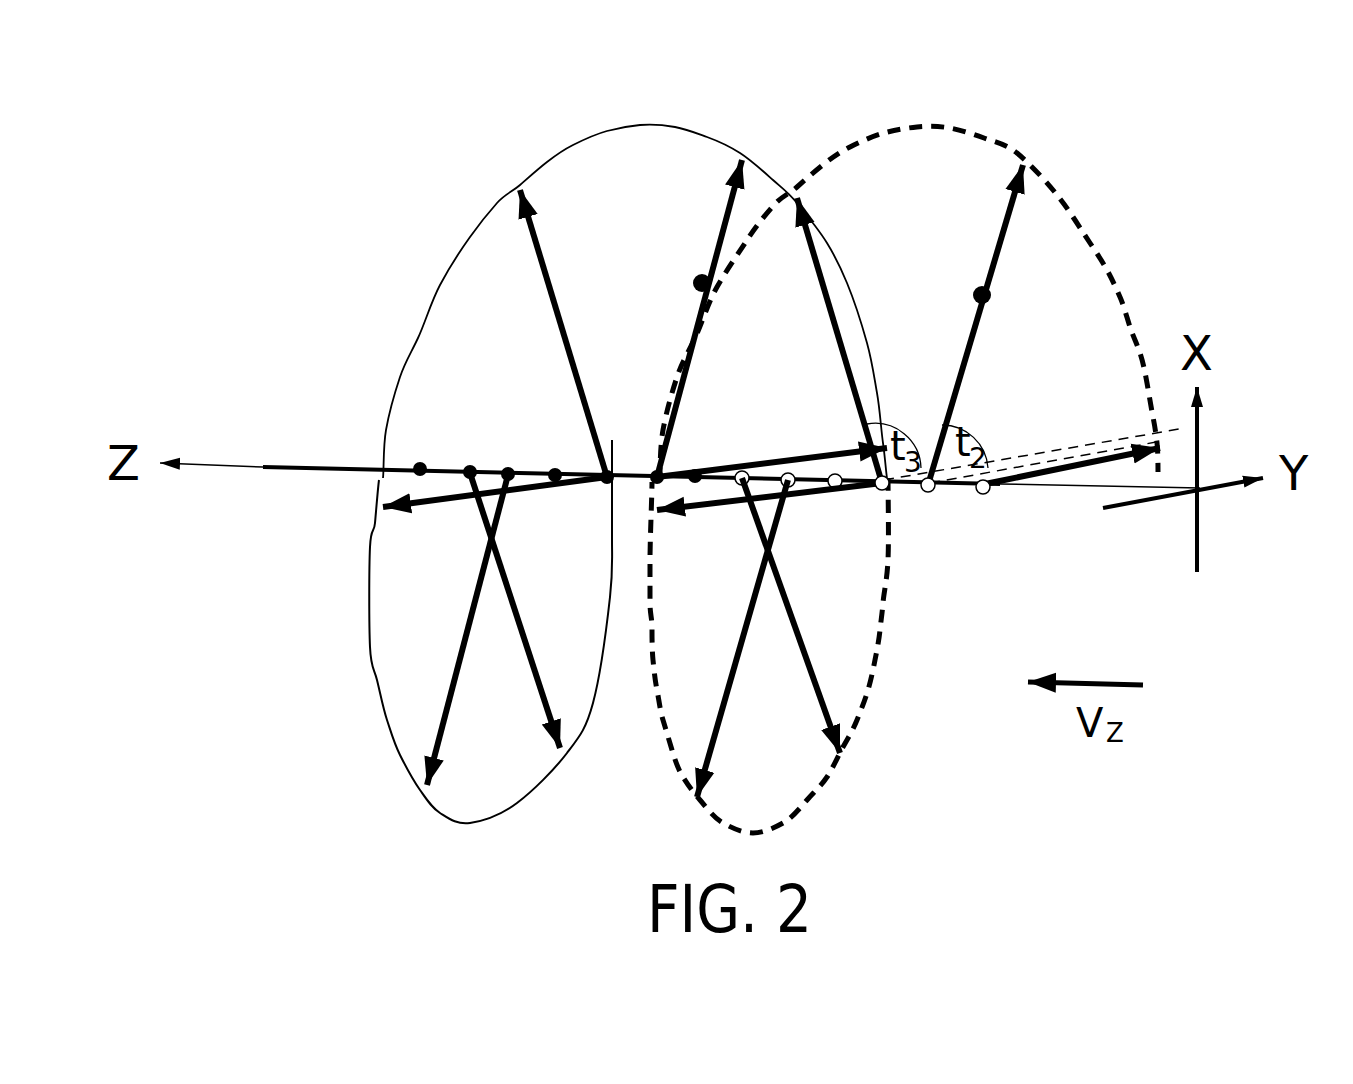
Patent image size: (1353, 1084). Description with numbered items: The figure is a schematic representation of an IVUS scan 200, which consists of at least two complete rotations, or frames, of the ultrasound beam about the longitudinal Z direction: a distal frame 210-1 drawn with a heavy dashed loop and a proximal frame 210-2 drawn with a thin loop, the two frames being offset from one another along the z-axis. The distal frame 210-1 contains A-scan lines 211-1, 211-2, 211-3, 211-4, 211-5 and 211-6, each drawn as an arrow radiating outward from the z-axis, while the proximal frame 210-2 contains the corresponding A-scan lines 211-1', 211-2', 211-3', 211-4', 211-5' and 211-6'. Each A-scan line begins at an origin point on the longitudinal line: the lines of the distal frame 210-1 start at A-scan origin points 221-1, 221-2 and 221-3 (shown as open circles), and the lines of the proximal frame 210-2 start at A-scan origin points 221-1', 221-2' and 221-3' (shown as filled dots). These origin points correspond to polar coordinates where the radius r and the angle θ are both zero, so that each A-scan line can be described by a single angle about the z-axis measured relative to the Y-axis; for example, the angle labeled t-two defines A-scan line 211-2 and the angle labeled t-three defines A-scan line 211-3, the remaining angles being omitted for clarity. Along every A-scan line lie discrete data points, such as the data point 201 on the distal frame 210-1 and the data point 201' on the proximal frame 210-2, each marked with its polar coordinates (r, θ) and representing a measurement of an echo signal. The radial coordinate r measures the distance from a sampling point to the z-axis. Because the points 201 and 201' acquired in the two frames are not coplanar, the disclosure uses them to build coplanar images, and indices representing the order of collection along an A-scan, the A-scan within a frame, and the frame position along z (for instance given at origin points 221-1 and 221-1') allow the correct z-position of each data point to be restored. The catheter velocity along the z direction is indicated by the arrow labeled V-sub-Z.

The IVUS scan 200 is at (382, 123).
The distal frame 210-1 is at (1097, 237).
The proximal frame 210-2 is at (413, 357).
The data point 201 is at (1005, 281).
The image point 201' is at (661, 263).
The A-scan line 211-1 is at (1072, 440).
The A-scan line 211-2 is at (965, 325).
The A-scan line 211-3 is at (816, 340).
The A-scan line 211-4 is at (769, 518).
The A-scan line 211-5 is at (730, 638).
The A-scan line 211-6 is at (790, 629).
The A-scan line 211-1' is at (772, 431).
The A-scan line 211-2' is at (687, 318).
The A-scan line 211-3' is at (538, 333).
The A-scan line 211-4' is at (495, 513).
The A-scan line 211-5' is at (454, 630).
The A-scan line 211-6' is at (511, 614).
The A-scan origin point 221-1 is at (1020, 523).
The A-scan origin point 221-2 is at (942, 521).
The A-scan origin point 221-3 is at (852, 515).
The A-scan origin point 221-1' is at (720, 454).
The A-scan origin point 221-2' is at (637, 442).
The A-scan origin point 221-3' is at (578, 501).